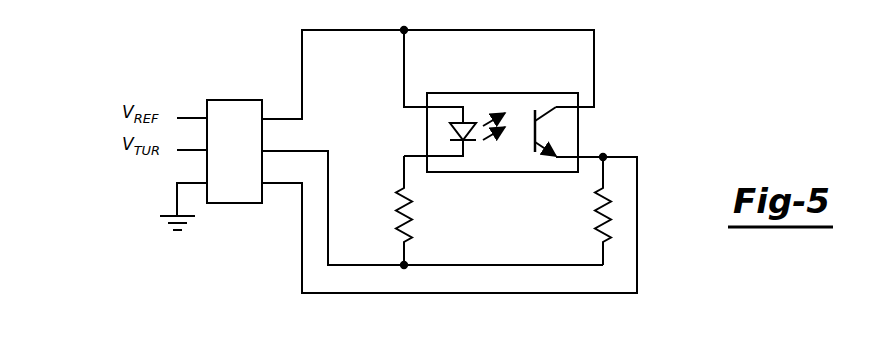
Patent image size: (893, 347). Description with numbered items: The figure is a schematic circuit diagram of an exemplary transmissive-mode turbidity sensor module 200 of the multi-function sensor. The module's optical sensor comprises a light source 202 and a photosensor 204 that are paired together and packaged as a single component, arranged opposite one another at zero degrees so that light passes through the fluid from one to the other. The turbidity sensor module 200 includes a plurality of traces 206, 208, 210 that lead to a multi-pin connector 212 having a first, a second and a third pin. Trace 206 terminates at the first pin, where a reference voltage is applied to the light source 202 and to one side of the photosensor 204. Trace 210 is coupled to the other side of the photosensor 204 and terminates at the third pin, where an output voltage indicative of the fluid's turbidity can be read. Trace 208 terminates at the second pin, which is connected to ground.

The turbidity sensor module 200 is at (474, 160).
The light source 202 is at (464, 101).
The photosensor 204 is at (539, 106).
The trace 206 is at (302, 88).
The trace 208 is at (330, 180).
The trace 210 is at (302, 253).
The multi-pin connector 212 is at (213, 100).